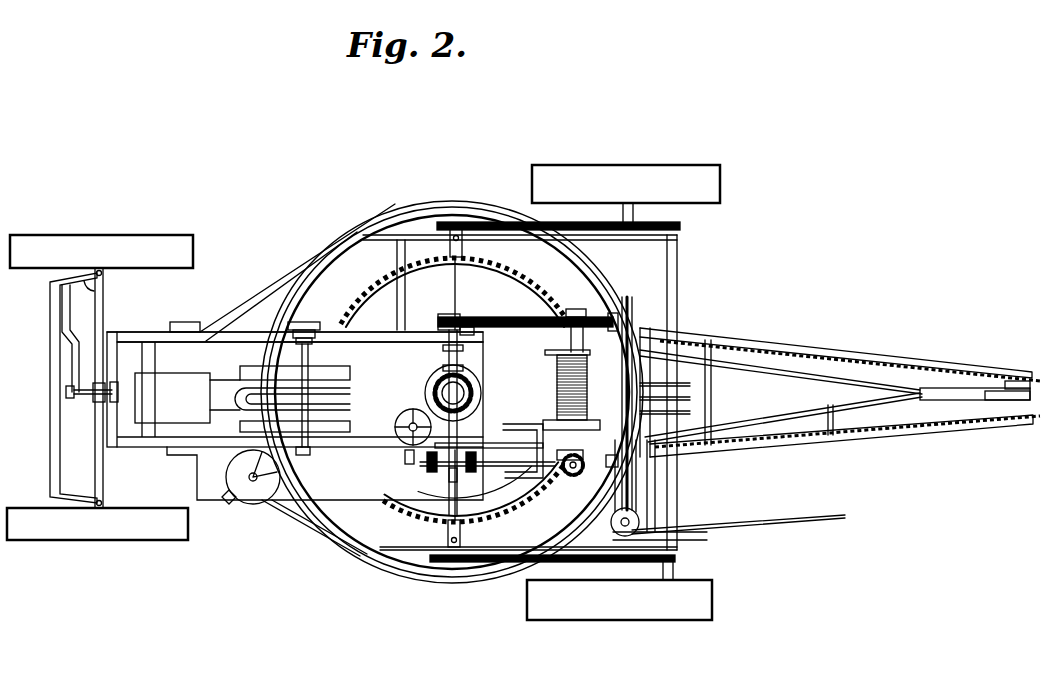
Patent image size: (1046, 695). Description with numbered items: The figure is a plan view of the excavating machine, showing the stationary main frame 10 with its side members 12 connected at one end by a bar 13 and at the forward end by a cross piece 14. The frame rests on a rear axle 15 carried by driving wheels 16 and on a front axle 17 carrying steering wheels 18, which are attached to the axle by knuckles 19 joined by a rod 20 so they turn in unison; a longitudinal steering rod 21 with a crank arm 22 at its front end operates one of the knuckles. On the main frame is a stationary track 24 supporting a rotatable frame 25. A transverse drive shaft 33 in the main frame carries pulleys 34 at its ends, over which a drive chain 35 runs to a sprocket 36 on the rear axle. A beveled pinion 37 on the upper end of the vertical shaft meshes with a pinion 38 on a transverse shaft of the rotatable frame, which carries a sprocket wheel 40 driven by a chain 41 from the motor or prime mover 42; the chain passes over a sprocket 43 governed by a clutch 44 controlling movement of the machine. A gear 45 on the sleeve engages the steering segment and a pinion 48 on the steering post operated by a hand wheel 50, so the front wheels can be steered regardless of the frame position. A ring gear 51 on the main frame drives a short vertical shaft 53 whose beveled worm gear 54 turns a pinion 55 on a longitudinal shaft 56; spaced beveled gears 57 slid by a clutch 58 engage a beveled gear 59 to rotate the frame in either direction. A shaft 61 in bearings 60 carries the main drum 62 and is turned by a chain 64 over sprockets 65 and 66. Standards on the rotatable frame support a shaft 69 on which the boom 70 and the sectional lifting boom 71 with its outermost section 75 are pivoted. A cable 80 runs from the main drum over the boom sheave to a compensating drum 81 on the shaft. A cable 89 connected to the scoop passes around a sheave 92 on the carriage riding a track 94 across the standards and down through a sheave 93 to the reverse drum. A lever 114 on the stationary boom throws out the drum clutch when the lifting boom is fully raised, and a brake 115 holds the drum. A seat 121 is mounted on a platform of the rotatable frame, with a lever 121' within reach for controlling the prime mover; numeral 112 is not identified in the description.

The main frame 10 is at (297, 525).
The side members 12 is at (485, 236).
The bar 13 is at (676, 312).
The cross piece 14 is at (115, 353).
The rear axle 15 is at (660, 573).
The wheels 16 is at (672, 174).
The front axle 17 is at (104, 470).
The wheels 18 is at (103, 536).
The knuckle 19 is at (88, 283).
The rod 20 is at (52, 377).
The steering rod 21 is at (85, 402).
The crank arm 22 is at (72, 398).
The stationary track 24 is at (397, 213).
The rotatable frame 25 is at (218, 334).
The drive shaft 33 is at (427, 555).
The pulleys 34 is at (456, 224).
The drive chain 35 is at (565, 222).
The sprocket 36 is at (613, 563).
The beveled pinion 37 is at (432, 388).
The pinion 38 is at (485, 402).
The sprocket wheel 40 is at (469, 327).
The chain 41 is at (360, 347).
The motor or prime mover 42 is at (168, 384).
The sprocket 43 is at (258, 366).
The clutch 44 is at (317, 318).
The gear 45 is at (495, 388).
The pinion 48 is at (397, 418).
The hand wheel 50 is at (407, 452).
The ring gear 51 is at (532, 508).
The shaft 53 is at (567, 488).
The beveled worm gear 54 is at (574, 476).
The pinion 55 is at (580, 465).
The shaft 56 is at (502, 470).
The beveled gears 57 is at (429, 473).
The clutch 58 is at (464, 466).
The beveled gear 59 is at (463, 370).
The bearings 60 is at (574, 327).
The shaft 61 is at (565, 318).
The main drum 62 is at (553, 357).
The chain 64 is at (528, 318).
The sprocket 65 is at (442, 317).
The sprocket 66 is at (630, 297).
The shaft 69 is at (668, 342).
The boom 70 is at (838, 350).
The lifting boom 71 is at (790, 372).
The outermost section 75 is at (1023, 398).
The cable 80 is at (557, 407).
The compensating drum 81 is at (643, 393).
The cable 89 is at (795, 517).
The sheave 92 is at (637, 515).
The sheave 93 is at (605, 402).
The track 94 is at (615, 318).
The lower tongue brace 112 is at (787, 402).
The lever 114 is at (865, 417).
The brake 115 is at (452, 474).
The seat 121 is at (248, 495).
The lever 121' is at (318, 466).